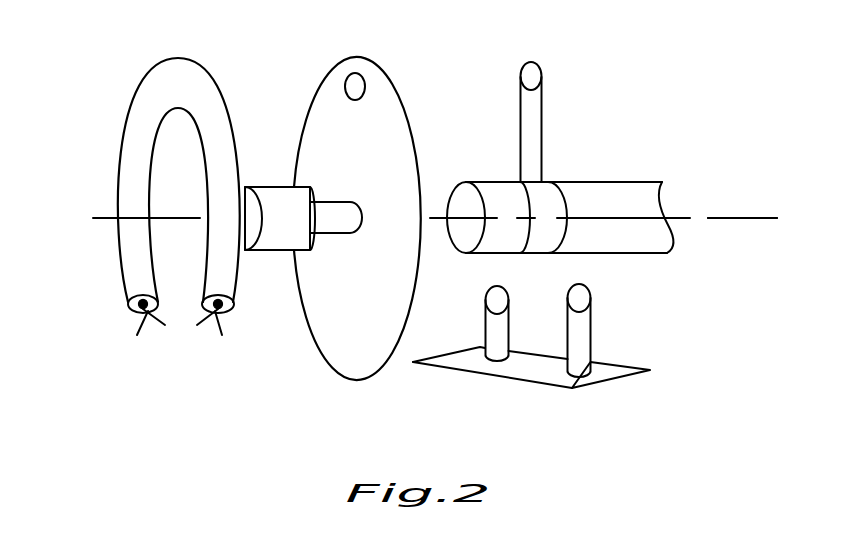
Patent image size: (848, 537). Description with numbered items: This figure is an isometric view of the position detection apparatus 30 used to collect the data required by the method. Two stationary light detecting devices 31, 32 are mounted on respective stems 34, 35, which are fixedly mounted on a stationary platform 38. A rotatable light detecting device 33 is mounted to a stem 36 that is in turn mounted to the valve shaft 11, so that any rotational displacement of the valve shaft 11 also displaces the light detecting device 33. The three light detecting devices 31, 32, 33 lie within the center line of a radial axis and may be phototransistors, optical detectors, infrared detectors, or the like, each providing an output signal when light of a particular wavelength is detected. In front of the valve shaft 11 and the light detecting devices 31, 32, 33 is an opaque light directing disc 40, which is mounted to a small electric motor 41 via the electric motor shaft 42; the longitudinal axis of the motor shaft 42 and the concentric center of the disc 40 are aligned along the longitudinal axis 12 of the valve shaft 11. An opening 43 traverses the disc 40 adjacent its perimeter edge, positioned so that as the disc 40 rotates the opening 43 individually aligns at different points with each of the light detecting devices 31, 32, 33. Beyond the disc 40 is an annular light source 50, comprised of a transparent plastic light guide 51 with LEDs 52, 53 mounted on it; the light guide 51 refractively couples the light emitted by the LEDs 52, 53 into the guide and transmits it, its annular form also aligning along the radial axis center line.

The light source 50 is at (116, 56).
The light guide 51 is at (200, 72).
The LED 52 is at (133, 315).
The LED 53 is at (220, 317).
The light directing disc 40 is at (404, 108).
The electric motor 41 is at (272, 187).
The electric motor shaft 42 is at (333, 233).
The opening 43 is at (348, 75).
The apparatus 30 is at (676, 84).
The valve shaft 11 is at (640, 182).
The longitudinal axis 12 is at (757, 217).
The stem 36 is at (543, 110).
The rotatable light detecting device 33 is at (538, 65).
The stationary light detecting device 31 is at (497, 287).
The stem 34 is at (509, 327).
The stationary light detecting device 32 is at (590, 288).
The stem 35 is at (590, 337).
The stationary platform 38 is at (622, 377).